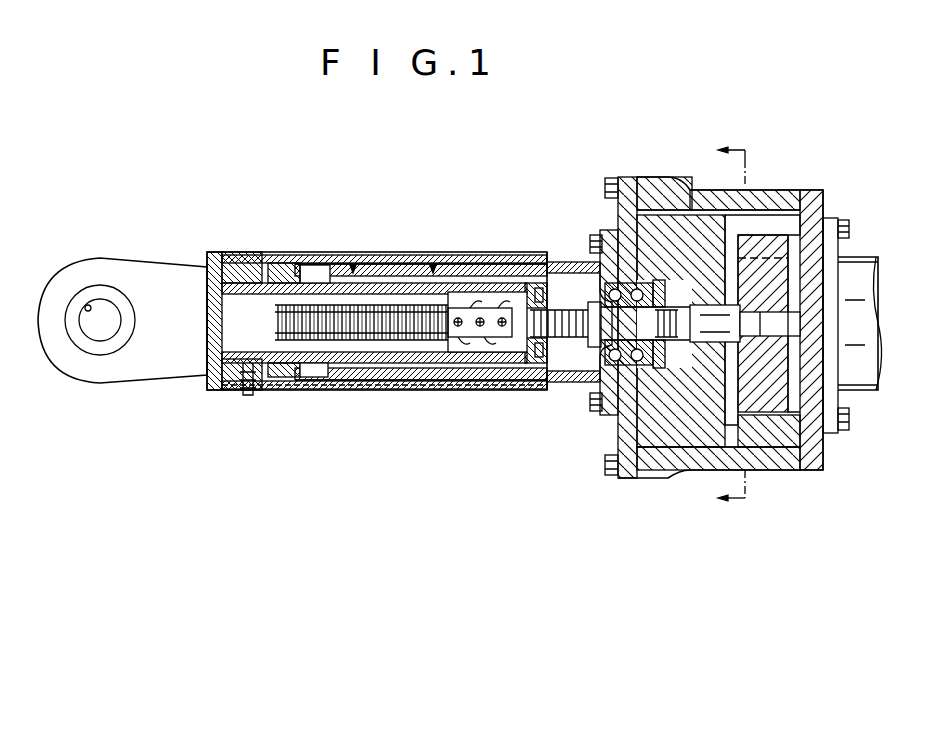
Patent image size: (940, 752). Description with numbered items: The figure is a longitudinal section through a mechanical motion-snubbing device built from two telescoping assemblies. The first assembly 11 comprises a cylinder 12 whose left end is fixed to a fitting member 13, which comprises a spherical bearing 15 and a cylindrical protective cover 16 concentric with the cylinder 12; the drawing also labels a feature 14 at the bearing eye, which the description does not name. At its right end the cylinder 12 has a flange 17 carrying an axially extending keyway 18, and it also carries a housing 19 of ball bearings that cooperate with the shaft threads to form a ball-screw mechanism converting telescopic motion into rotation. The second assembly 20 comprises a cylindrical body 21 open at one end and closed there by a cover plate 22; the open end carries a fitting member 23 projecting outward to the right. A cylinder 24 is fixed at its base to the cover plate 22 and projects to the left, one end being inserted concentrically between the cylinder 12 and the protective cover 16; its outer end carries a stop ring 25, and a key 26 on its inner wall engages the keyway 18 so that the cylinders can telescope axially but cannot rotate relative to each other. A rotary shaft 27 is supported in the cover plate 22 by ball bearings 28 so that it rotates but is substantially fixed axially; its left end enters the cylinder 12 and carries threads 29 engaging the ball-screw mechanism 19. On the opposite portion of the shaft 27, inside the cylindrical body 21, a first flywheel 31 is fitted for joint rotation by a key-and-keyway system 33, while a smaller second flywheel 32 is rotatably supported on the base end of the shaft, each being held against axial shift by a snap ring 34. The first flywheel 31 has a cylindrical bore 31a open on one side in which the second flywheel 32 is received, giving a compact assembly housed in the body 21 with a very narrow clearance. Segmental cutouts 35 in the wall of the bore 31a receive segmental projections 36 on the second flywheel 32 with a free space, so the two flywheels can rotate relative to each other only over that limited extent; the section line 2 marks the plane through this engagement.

The section line 2- 2 is at (720, 325).
The first assembly 11 is at (281, 251).
The cylinder 12 is at (312, 270).
The fitting member 13 is at (177, 275).
The bore 14 is at (87, 306).
The spherical bearing 15 is at (108, 296).
The cylindrical protective cover 16 is at (370, 263).
The flange 17 is at (545, 363).
The keyway 18 is at (526, 283).
The housing of ball bearings 19 is at (462, 297).
The second assembly 20 is at (585, 210).
The cylindrical body 21 is at (801, 190).
The cover plate 22 is at (623, 186).
The fitting member 23 is at (866, 306).
The cylinder 24 is at (554, 270).
The stop ring 25 is at (285, 375).
The key 26 is at (430, 275).
The rotary shaft 27 is at (585, 322).
The ball bearings 28 is at (620, 412).
The threads 29 is at (393, 348).
The first flywheel 31 is at (690, 208).
The cylindrical bore 31a is at (740, 240).
The second flywheel 32 is at (822, 260).
The key-and-keyway system 33 is at (672, 340).
The snap ring 34 is at (735, 342).
The segmental cutouts 35 is at (812, 206).
The segmental projections 36 is at (824, 225).